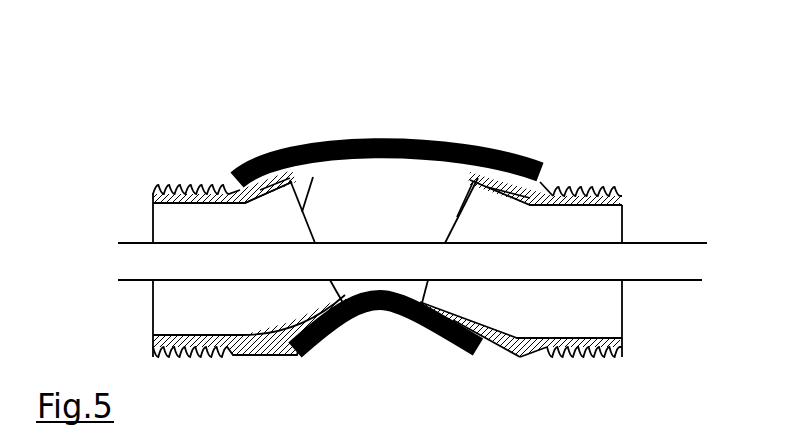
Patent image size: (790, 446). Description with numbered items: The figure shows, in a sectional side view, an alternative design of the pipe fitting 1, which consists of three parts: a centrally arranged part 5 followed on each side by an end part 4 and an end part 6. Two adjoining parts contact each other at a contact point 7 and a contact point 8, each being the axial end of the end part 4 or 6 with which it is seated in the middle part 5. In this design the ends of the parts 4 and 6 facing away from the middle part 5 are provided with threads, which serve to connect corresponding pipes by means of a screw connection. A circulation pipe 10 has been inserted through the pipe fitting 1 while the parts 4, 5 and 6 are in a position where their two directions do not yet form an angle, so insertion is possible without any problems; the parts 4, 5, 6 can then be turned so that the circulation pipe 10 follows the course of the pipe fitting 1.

The pipe fitting 1 is at (392, 98).
The end part 4 is at (253, 357).
The centrally arranged part 5 is at (373, 322).
The end part 6 is at (518, 357).
The contact point 7 is at (322, 143).
The contact point 8 is at (457, 203).
The circulation pipe 10 is at (677, 243).